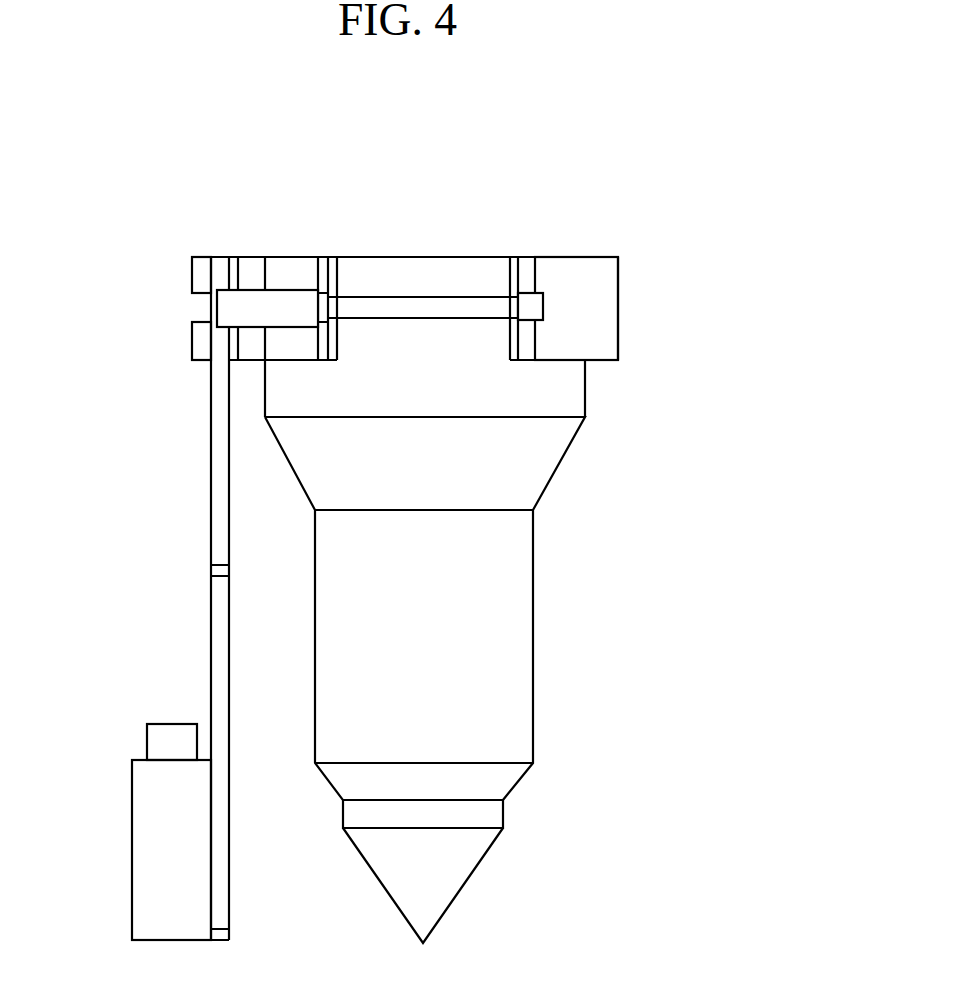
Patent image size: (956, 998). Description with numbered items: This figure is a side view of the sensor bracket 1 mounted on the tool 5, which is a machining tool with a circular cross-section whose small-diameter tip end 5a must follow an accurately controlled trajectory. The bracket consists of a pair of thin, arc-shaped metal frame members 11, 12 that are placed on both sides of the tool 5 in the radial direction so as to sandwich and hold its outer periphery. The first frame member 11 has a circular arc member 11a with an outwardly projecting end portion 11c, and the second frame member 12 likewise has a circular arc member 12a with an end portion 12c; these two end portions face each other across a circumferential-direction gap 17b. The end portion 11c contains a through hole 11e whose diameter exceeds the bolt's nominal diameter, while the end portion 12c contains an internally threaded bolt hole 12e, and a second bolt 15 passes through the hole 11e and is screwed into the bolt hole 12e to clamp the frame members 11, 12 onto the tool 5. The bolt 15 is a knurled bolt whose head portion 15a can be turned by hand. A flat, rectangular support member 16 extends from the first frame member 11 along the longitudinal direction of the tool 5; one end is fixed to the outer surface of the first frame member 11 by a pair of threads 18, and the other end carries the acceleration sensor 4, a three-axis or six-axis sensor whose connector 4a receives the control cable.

The sensor bracket 1 is at (142, 410).
The acceleration sensor 4 is at (132, 815).
The connector 4a is at (147, 738).
The tool 5 is at (533, 683).
The tip end 5a is at (423, 943).
The first frame member 11 is at (253, 257).
The circular arc member 11a is at (245, 360).
The end portion 11c is at (323, 265).
The hole 11e is at (337, 308).
The second frame member 12 is at (605, 257).
The circular arc member 12a is at (618, 304).
The end portion 12c is at (527, 270).
The bolt hole 12e is at (518, 307).
The second bolt 15 is at (432, 320).
The head portion 15a is at (282, 290).
The support member 16 is at (211, 640).
The circumferential-direction gap 17b is at (409, 292).
The threads 18 is at (192, 272).